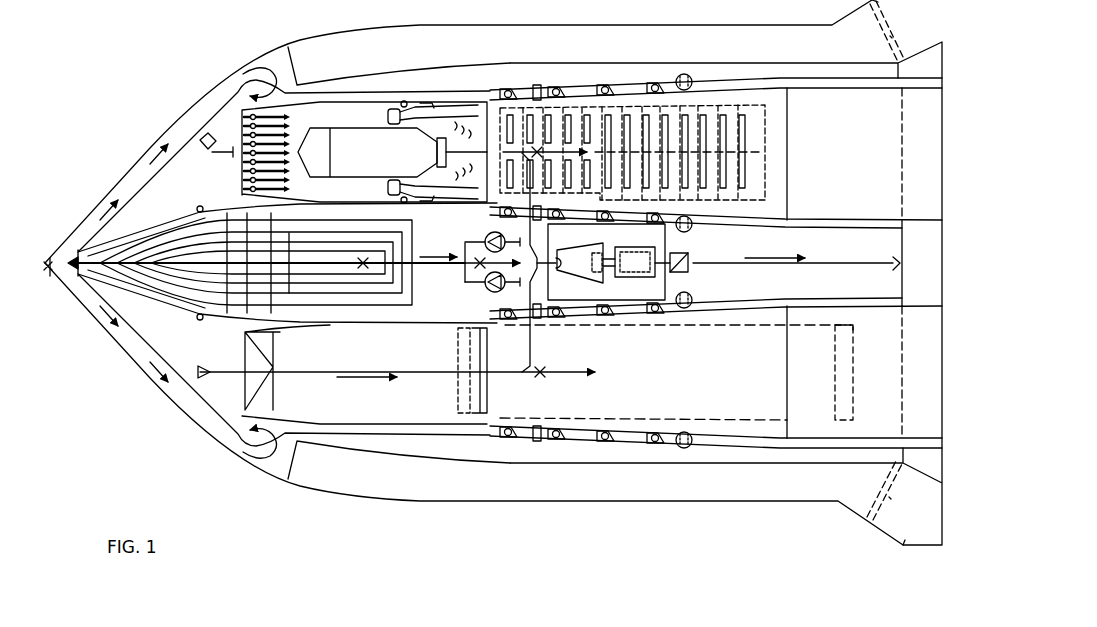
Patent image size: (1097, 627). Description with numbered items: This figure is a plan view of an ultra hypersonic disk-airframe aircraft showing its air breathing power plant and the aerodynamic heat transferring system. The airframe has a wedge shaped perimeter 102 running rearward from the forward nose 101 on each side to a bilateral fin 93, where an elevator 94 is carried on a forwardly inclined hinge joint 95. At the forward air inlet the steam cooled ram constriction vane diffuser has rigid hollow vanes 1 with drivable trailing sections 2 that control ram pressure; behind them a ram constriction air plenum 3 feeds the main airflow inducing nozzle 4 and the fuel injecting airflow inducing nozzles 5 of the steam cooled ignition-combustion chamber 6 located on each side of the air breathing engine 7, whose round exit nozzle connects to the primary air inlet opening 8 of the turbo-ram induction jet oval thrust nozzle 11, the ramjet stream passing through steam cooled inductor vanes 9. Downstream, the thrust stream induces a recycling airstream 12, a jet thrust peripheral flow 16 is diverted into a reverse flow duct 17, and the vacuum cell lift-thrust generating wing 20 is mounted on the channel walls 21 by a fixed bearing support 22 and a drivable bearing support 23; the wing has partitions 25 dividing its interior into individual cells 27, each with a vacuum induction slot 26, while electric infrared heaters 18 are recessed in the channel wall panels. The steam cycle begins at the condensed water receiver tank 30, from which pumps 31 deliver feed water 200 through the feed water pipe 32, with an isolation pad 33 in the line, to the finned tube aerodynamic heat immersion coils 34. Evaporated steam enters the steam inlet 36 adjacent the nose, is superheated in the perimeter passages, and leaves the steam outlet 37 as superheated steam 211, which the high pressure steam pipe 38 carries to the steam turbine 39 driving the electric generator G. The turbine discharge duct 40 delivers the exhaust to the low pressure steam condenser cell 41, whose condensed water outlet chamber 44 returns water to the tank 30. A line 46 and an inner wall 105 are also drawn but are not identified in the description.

The hollow vanes of ram constriction vane diffuser 1 is at (245, 180).
The drivable trailing sections 2 is at (284, 184).
The ram constriction air plenum 3 is at (358, 113).
The main airflow inducing nozzle 4 is at (388, 113).
The fuel injecting airflow inducing nozzles 5 is at (404, 100).
The ignition-combustion chamber 6 is at (428, 103).
The air breathing engine 7 is at (392, 152).
The primary air inlet opening 8 is at (437, 152).
The inductor vanes 9 is at (466, 151).
The oval thrust nozzle 11 is at (486, 156).
The recycling airstream 12 is at (458, 392).
The jet thrust peripheral flow 16 is at (853, 365).
The reverse flow duct 17 is at (770, 328).
The electric infrared heaters 18 is at (606, 91).
The vacuum cell lift-thrust generating wing 20 is at (772, 382).
The channel walls 21 is at (872, 92).
The fixed bearing support 22 is at (540, 86).
The drivable bearing support 23 is at (689, 74).
The partitions 25 is at (760, 107).
The vacuum induction slot 26 is at (760, 130).
The individual cell 27 is at (760, 165).
The condensed water receiver tank 30 is at (606, 233).
The pumps 31 is at (491, 235).
The feed water pipe 32 is at (461, 262).
The isolation pad 33 is at (476, 256).
The finned tube aerodynamic heat immersion coils 34 is at (320, 275).
The steam inlet 36 is at (50, 269).
The steam outlet 37 is at (205, 153).
The high pressure steam pipe 38 is at (297, 370).
The steam turbine 39 is at (598, 280).
The turbine discharge duct 40 is at (688, 258).
The low pressure steam condenser cell 41 is at (916, 178).
The condensed water outlet chamber 44 is at (917, 292).
The outlet line 46 is at (860, 267).
The bilateral fin 93 is at (872, 52).
The elevator 94 is at (893, 8).
The hinge joint 95 is at (892, 36).
The nose 101 is at (46, 258).
The wedge shaped perimeter 102 is at (137, 162).
The inner wall 105 is at (203, 122).
The feed water 200 is at (439, 247).
The superheated steam 211 is at (152, 196).